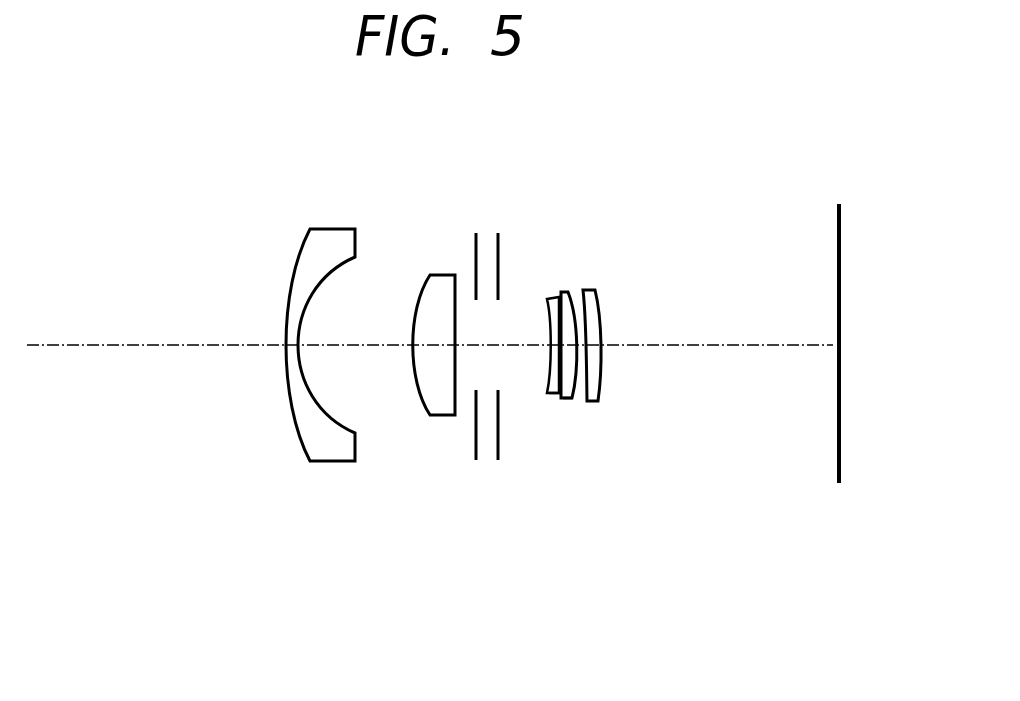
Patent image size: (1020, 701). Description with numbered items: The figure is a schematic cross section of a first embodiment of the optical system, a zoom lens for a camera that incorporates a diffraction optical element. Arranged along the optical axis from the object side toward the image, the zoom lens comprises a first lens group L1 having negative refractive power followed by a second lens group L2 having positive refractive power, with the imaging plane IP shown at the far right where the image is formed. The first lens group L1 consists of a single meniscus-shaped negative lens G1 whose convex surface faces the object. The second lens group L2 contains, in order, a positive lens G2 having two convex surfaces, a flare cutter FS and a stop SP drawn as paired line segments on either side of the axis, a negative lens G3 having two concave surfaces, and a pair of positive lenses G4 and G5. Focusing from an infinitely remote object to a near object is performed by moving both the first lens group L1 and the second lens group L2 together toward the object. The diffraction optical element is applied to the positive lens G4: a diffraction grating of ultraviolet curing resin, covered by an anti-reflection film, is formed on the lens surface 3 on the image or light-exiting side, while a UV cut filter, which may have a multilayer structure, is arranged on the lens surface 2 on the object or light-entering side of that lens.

The first lens group L1 is at (376, 153).
The second lens group L2 is at (615, 153).
The negative lens G1 is at (333, 228).
The positive lens G2 is at (441, 283).
The negative lens G3 is at (553, 298).
The positive lens G4 is at (566, 293).
The positive lens G5 is at (591, 290).
The flare cutter FS is at (481, 232).
The stop SP is at (506, 235).
The imaging plane IP is at (840, 220).
The lens surface 2 is at (558, 397).
The lens surface 3 is at (574, 401).